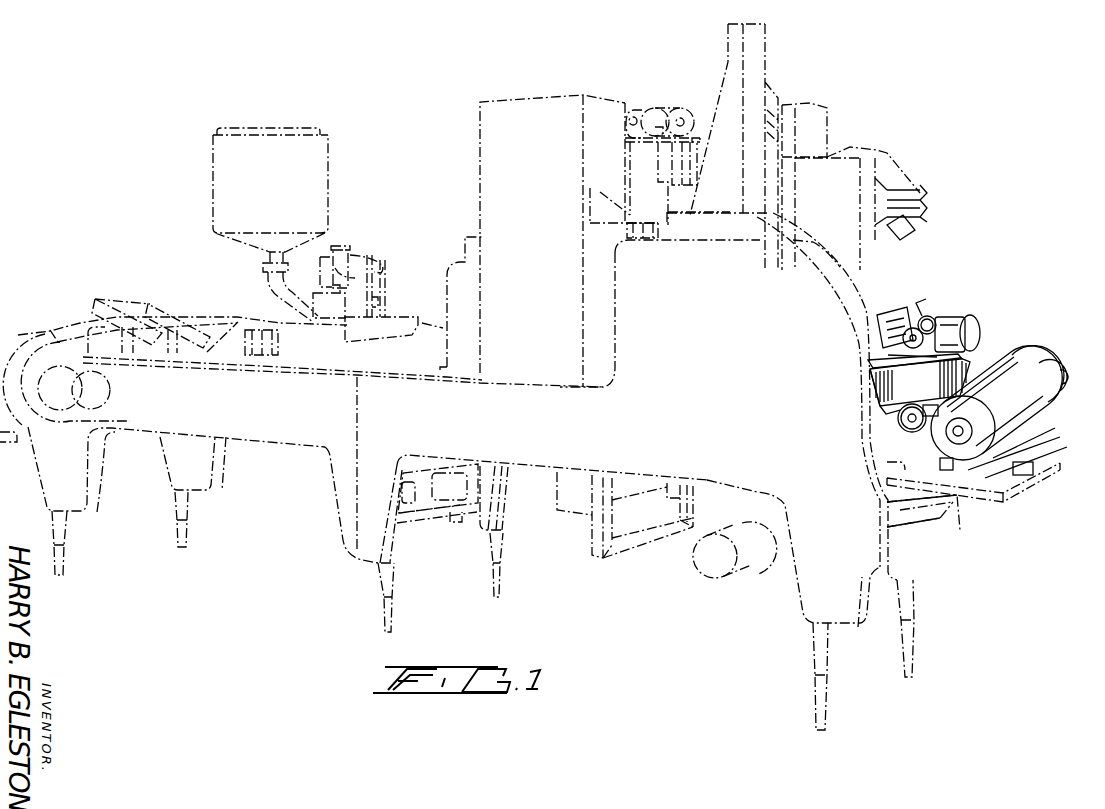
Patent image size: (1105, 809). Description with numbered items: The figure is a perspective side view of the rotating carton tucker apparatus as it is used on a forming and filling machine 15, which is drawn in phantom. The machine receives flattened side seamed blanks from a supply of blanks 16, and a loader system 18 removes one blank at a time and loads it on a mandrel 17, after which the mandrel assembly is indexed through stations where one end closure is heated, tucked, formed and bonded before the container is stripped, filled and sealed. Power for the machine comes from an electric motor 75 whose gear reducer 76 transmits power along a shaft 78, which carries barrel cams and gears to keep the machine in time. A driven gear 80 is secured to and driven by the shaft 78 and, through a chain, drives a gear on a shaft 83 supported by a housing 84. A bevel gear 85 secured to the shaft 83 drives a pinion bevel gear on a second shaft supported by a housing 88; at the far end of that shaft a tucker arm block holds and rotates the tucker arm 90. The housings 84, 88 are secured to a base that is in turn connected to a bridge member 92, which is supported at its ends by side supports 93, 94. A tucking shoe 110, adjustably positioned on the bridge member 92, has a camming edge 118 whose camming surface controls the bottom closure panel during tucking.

The forming and filling machine 15 is at (403, 182).
The supply of blanks 16 is at (715, 105).
The mandrel 17 is at (878, 333).
The loader system 18 is at (822, 100).
The electric motor 75 is at (993, 373).
The gear reducer 76 is at (1025, 355).
The shaft 78 is at (938, 411).
The driven gear 80 is at (917, 433).
The shaft 83 is at (937, 313).
The housing 84 is at (960, 318).
The bevel gear 85 is at (923, 307).
The housing 88 is at (920, 382).
The tucker arm 90 is at (887, 315).
The bridge member 92 is at (900, 398).
The side support 93 is at (905, 258).
The side support 94 is at (883, 505).
The tucking shoe 110 is at (893, 373).
The camming edge 118 is at (887, 360).